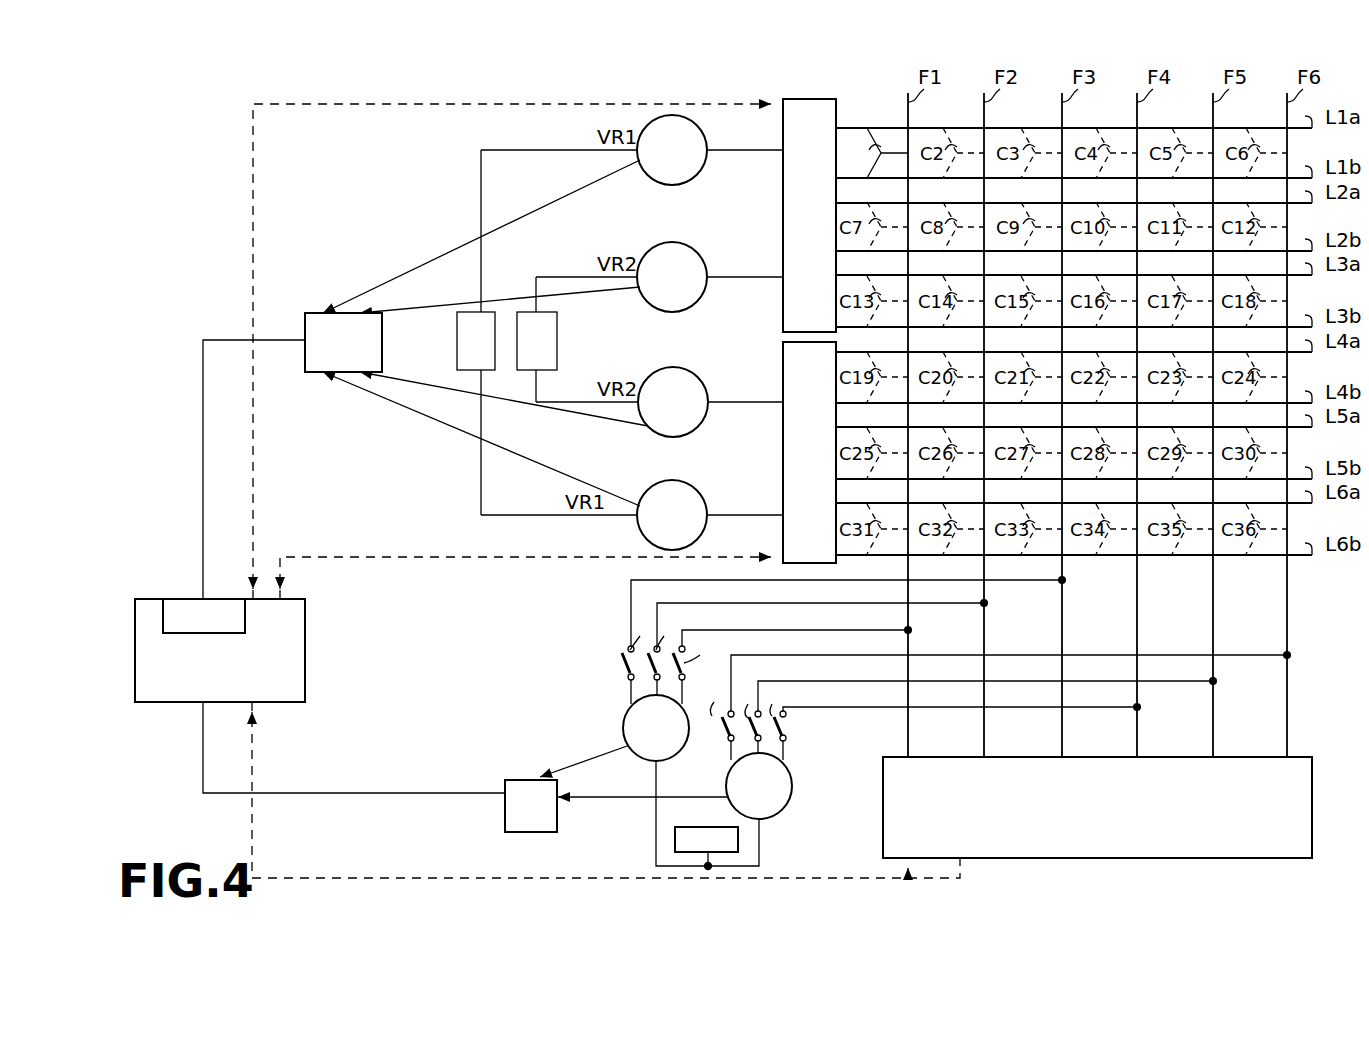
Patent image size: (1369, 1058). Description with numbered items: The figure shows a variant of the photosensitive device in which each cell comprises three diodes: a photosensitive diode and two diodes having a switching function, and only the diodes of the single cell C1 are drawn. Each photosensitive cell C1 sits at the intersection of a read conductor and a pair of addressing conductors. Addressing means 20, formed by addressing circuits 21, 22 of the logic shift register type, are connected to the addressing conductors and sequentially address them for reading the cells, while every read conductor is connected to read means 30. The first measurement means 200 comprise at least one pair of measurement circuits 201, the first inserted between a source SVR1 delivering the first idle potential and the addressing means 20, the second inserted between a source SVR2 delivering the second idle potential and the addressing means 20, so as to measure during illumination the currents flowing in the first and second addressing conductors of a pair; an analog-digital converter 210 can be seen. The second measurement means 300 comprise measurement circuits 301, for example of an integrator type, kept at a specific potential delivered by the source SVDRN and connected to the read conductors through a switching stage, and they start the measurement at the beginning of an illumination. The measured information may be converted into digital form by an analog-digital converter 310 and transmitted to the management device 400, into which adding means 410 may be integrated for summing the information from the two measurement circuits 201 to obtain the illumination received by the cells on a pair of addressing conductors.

The addressing means 20 is at (804, 92).
The addressing circuit 21 is at (821, 227).
The addressing circuit 22 is at (821, 453).
The read means 30 is at (1098, 818).
The first measurement means 200 is at (714, 168).
The measurement circuit 201 is at (683, 527).
The analog-digital converter 210 is at (361, 355).
The second measurement means 300 is at (956, 723).
The measurement circuit 301 is at (674, 740).
The analog-digital converter 310 is at (548, 817).
The management device 400 is at (233, 670).
The adding means 410 is at (219, 629).
The photosensitive cell C1 is at (886, 127).
The source delivering the first idle potential SVR1 is at (478, 341).
The source delivering the second idle potential SVR2 is at (538, 341).
The source delivering the specific potential SVDRN is at (706, 839).